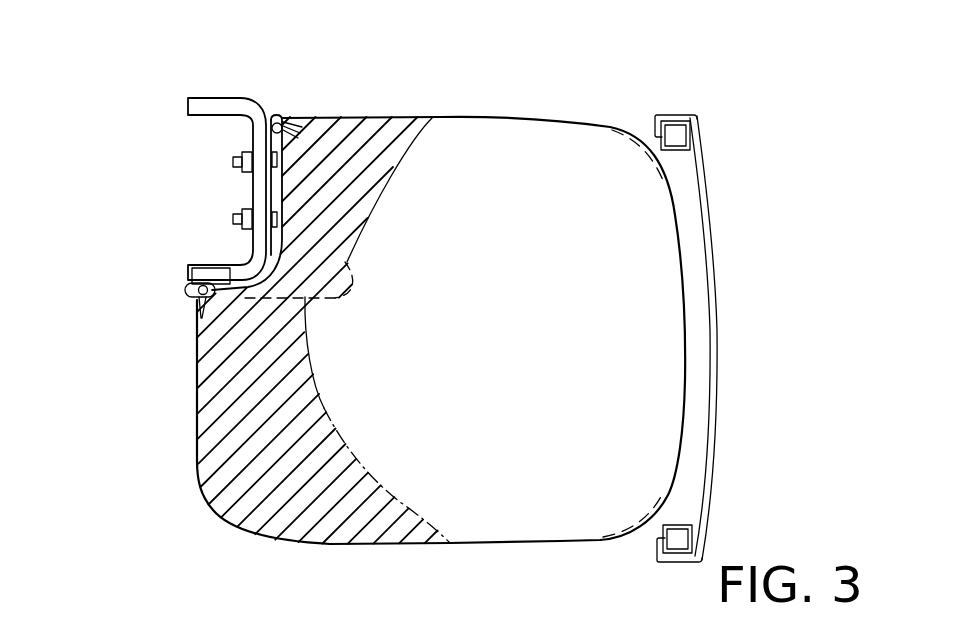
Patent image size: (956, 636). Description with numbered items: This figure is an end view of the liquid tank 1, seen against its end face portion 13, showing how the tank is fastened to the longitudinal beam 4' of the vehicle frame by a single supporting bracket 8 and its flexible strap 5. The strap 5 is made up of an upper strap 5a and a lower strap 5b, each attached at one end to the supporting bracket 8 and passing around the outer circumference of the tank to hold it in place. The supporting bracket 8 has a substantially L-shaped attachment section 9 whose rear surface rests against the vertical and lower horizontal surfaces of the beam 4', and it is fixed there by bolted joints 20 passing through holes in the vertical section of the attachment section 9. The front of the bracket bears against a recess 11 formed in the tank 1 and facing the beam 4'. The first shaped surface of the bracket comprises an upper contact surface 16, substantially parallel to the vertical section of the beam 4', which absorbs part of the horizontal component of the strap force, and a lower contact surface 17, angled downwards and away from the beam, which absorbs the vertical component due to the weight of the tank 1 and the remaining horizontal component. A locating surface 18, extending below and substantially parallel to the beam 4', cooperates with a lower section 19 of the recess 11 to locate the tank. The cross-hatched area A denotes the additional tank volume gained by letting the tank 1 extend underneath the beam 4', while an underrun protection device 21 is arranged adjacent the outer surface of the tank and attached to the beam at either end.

The tank 1 is at (648, 90).
The longitudinal beam 4' is at (184, 162).
The flexible strap 5 is at (197, 298).
The upper strap 5a is at (553, 118).
The lower strap 5b is at (553, 543).
The supporting bracket 8 is at (278, 112).
The attachment section 9 is at (266, 113).
The recess 11 is at (335, 311).
The end face portion 13 is at (509, 322).
The upper contact surface 16 is at (295, 190).
The lower contact surface 17 is at (347, 262).
The locating surface 18 is at (270, 304).
The lower section of the recess 19 is at (219, 282).
The bolted joints 20 is at (233, 218).
The underrun protection device 21 is at (711, 268).
The cross-hatched area A is at (200, 508).